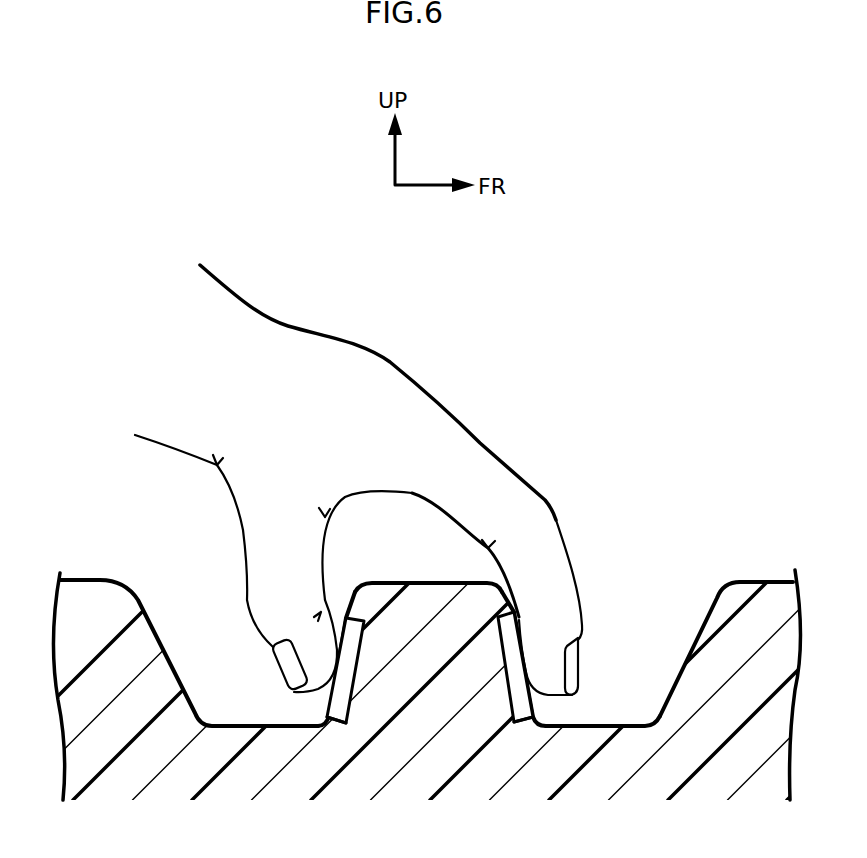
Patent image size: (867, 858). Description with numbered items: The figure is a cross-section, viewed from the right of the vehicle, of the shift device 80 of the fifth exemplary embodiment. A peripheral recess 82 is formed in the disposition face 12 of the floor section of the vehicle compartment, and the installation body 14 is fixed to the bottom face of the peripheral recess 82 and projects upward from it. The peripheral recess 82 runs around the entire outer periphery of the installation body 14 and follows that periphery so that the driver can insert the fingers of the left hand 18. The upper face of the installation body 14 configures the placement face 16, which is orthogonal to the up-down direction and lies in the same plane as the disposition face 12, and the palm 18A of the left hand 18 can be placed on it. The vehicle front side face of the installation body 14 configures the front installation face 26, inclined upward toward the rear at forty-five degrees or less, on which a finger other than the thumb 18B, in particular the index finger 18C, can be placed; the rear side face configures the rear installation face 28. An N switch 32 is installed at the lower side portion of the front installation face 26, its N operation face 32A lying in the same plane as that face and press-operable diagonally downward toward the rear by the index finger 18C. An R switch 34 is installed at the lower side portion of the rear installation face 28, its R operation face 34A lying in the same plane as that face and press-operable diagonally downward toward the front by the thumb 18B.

The disposition face 12 is at (83, 580).
The installation body 14 is at (414, 607).
The placement face 16 is at (450, 577).
The left hand 18 is at (416, 383).
The palm 18A is at (377, 497).
The thumb 18B is at (246, 548).
The index finger 18C is at (562, 526).
The front installation face 26 is at (524, 609).
The rear installation face 28 is at (348, 603).
The N switch 32 is at (507, 600).
The N operation face 32A is at (536, 718).
The R switch 34 is at (354, 615).
The R operation face 34A is at (326, 708).
The shift device 80 is at (583, 409).
The peripheral recess 82 is at (703, 612).